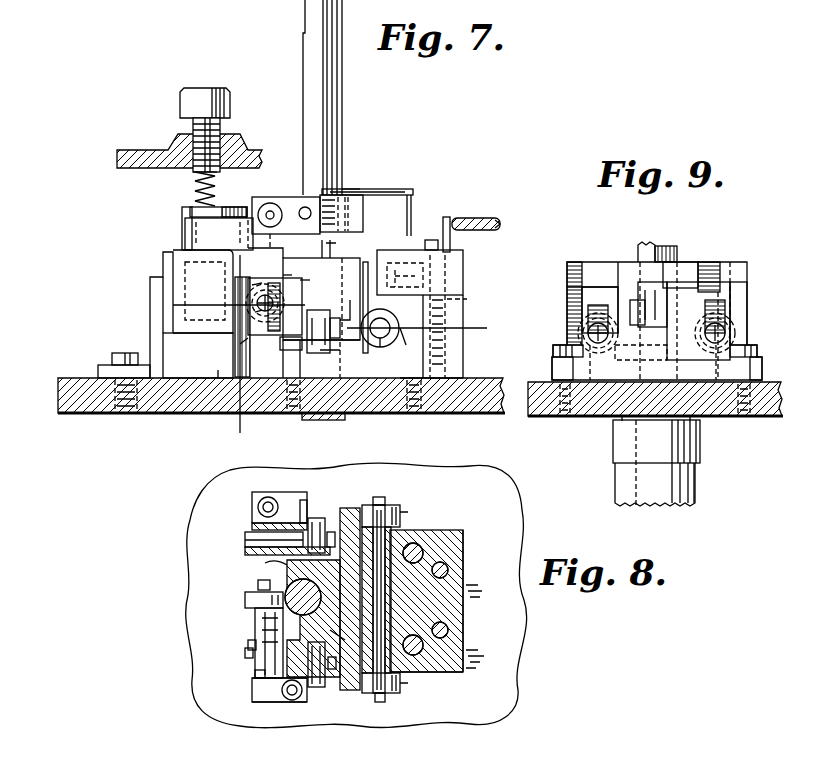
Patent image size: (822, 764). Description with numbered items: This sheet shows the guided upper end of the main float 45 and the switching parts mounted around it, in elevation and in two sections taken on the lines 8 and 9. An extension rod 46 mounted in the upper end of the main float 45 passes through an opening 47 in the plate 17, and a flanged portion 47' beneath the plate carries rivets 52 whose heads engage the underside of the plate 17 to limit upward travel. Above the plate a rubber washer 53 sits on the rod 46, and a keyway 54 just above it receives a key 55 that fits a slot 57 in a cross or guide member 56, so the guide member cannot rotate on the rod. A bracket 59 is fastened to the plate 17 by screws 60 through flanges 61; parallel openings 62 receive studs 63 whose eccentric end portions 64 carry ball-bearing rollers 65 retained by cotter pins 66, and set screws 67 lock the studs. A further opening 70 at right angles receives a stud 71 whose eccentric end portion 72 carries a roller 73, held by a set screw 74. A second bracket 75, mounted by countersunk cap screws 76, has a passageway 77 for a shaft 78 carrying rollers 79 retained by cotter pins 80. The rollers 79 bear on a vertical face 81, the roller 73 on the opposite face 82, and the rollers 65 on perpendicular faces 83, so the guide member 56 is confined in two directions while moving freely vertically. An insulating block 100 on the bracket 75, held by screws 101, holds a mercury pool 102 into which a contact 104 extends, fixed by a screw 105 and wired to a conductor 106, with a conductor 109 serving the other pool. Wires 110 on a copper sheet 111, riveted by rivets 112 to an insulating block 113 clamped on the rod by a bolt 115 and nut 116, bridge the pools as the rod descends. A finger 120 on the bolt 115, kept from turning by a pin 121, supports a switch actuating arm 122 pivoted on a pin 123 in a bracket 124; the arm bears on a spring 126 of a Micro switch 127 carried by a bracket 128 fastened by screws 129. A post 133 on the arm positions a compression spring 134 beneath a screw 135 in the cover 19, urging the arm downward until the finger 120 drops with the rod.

In FIG. 7, the plate 17 is at (58, 392).
In FIG. 9, the plate 17 is at (718, 416).
In FIG. 8, the plate 17 is at (190, 538).
In FIG. 7, the cover 19 is at (117, 160).
In FIG. 9, the main float 45 is at (697, 494).
In FIG. 7, the extension rod 46 is at (342, 131).
In FIG. 9, the extension rod 46 is at (640, 243).
In FIG. 7, the opening 47 is at (340, 424).
In FIG. 9, the lower member 47' is at (635, 426).
In FIG. 9, the rivets 52 is at (613, 446).
In FIG. 7, the rubber washer 53 is at (350, 360).
In FIG. 9, the rubber washer 53 is at (641, 360).
In FIG. 8, the keyway 54 is at (312, 597).
In FIG. 9, the key 55 is at (664, 246).
In FIG. 8, the key 55 is at (287, 575).
In FIG. 7, the guide member 56 is at (348, 262).
In FIG. 9, the guide member 56 is at (592, 262).
In FIG. 8, the guide member 56 is at (362, 612).
In FIG. 8, the slot 57 is at (258, 620).
In FIG. 7, the bracket 59 is at (313, 269).
In FIG. 9, the bracket 59 is at (588, 298).
In FIG. 8, the bracket 59 is at (254, 702).
In FIG. 7, the screws 60 is at (281, 345).
In FIG. 9, the screws 60 is at (553, 352).
In FIG. 8, the screws 60 is at (272, 497).
In FIG. 7, the flanges 61 is at (272, 372).
In FIG. 9, the flanges 61 is at (552, 368).
In FIG. 8, the flanges 61 is at (252, 497).
In FIG. 7, the parallel openings 62 is at (236, 350).
In FIG. 9, the parallel openings 62 is at (588, 333).
In FIG. 8, the parallel openings 62 is at (240, 676).
In FIG. 7, the studs 63 is at (238, 341).
In FIG. 9, the studs 63 is at (658, 362).
In FIG. 8, the studs 63 is at (245, 538).
In FIG. 7, the eccentric end portion 64 is at (321, 359).
In FIG. 8, the eccentric end portion 64 is at (334, 532).
In FIG. 7, the roller 65 is at (316, 310).
In FIG. 9, the roller 65 is at (585, 333).
In FIG. 8, the roller 65 is at (316, 518).
In FIG. 7, the cotter pin 66 is at (351, 300).
In FIG. 8, the cotter pin 66 is at (347, 508).
In FIG. 7, the set screws 67 is at (292, 267).
In FIG. 9, the set screws 67 is at (575, 310).
In FIG. 8, the set screws 67 is at (279, 688).
In FIG. 7, the opening 70 is at (257, 297).
In FIG. 9, the opening 70 is at (698, 321).
In FIG. 8, the opening 70 is at (258, 640).
In FIG. 7, the stud 71 is at (255, 312).
In FIG. 9, the stud 71 is at (745, 308).
In FIG. 8, the stud 71 is at (255, 684).
In FIG. 9, the eccentric end portion 72 is at (632, 314).
In FIG. 8, the eccentric end portion 72 is at (258, 587).
In FIG. 7, the roller 73 is at (252, 285).
In FIG. 9, the roller 73 is at (650, 286).
In FIG. 8, the roller 73 is at (245, 601).
In FIG. 7, the set screw 74 is at (275, 297).
In FIG. 9, the set screw 74 is at (698, 262).
In FIG. 7, the second bracket 75 is at (463, 353).
In FIG. 8, the second bracket 75 is at (464, 660).
In FIG. 7, the countersunk cap screws 76 is at (432, 403).
In FIG. 8, the countersunk cap screws 76 is at (444, 530).
In FIG. 8, the passageway 77 is at (400, 534).
In FIG. 7, the shaft 78 is at (376, 309).
In FIG. 8, the shaft 78 is at (379, 587).
In FIG. 7, the rollers 79 is at (412, 343).
In FIG. 8, the rollers 79 is at (403, 512).
In FIG. 7, the cotter pins 80 is at (396, 346).
In FIG. 8, the cotter pins 80 is at (387, 505).
In FIG. 7, the vertical face 81 is at (371, 305).
In FIG. 8, the vertical face 81 is at (377, 600).
In FIG. 7, the parallel face 82 is at (265, 248).
In FIG. 8, the parallel face 82 is at (265, 563).
In FIG. 7, the parallel faces 83 is at (327, 247).
In FIG. 8, the parallel faces 83 is at (252, 524).
In FIG. 7, the block of electrical insulating material 100 is at (463, 287).
In FIG. 7, the screws 101 is at (467, 299).
In FIG. 8, the screws 101 is at (448, 570).
In FIG. 7, the mercury pool 102 is at (392, 263).
In FIG. 7, the contact 104 is at (446, 217).
In FIG. 7, the screw 105 is at (430, 240).
In FIG. 7, the conductor 106 is at (470, 218).
In FIG. 7, the conductor 109 is at (500, 222).
In FIG. 7, the wires 110 is at (405, 189).
In FIG. 7, the sheet copper 111 is at (378, 189).
In FIG. 7, the rivets 112 is at (350, 189).
In FIG. 7, the block of insulating material 113 is at (363, 213).
In FIG. 7, the bolt 115 is at (235, 200).
In FIG. 7, the nut 116 is at (268, 203).
In FIG. 7, the finger 120 is at (187, 232).
In FIG. 7, the pin 121 is at (300, 207).
In FIG. 7, the switch actuating arm 122 is at (190, 211).
In FIG. 7, the pin 123 is at (182, 222).
In FIG. 7, the bracket 124 is at (218, 376).
In FIG. 7, the spring 126 is at (248, 242).
In FIG. 7, the Micro switch 127 is at (197, 355).
In FIG. 7, the bracket 128 is at (150, 311).
In FIG. 7, the screws 129 is at (112, 360).
In FIG. 7, the upright post 133 is at (196, 190).
In FIG. 7, the compression spring 134 is at (195, 176).
In FIG. 7, the screw 135 is at (206, 88).
In FIG. 7, the section line 8 is at (182, 293).
In FIG. 7, the section line 9 is at (270, 250).